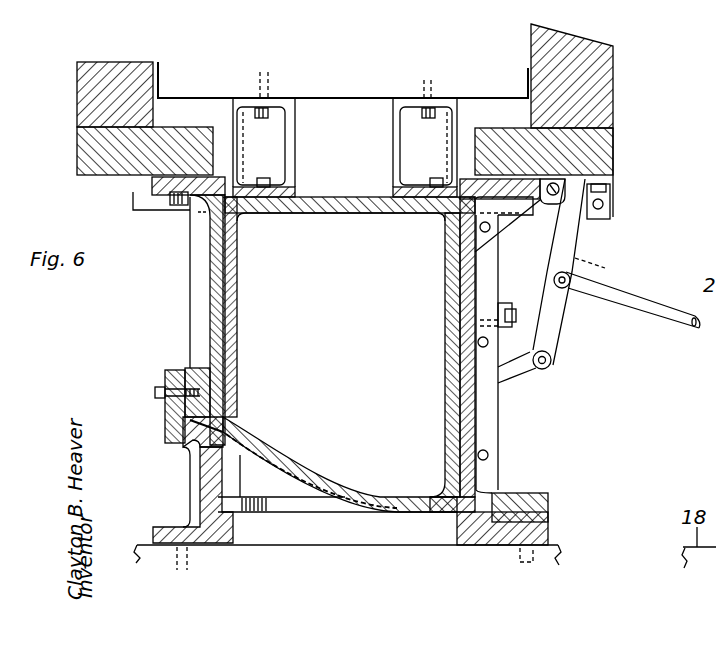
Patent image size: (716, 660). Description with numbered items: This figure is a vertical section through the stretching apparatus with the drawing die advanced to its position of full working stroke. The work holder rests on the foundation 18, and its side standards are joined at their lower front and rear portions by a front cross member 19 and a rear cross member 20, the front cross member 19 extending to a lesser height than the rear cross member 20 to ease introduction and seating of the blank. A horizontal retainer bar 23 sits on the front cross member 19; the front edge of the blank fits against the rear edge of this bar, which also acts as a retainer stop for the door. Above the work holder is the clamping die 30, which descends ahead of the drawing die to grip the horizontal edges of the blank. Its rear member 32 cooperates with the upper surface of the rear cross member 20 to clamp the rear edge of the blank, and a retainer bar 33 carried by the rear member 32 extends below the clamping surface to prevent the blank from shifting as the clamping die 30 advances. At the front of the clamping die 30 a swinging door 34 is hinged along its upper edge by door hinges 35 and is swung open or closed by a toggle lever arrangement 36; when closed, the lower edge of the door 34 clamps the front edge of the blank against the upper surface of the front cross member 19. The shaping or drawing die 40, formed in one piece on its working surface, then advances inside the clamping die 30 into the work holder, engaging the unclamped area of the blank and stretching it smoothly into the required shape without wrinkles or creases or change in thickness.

The foundation 18 is at (567, 553).
The front cross member 19 is at (483, 551).
The rear cross member 20 is at (200, 471).
The retainer bar 23 is at (502, 491).
The clamping die 30 is at (619, 101).
The rear member of clamping die 32 is at (190, 370).
The retainer bar 33 is at (161, 421).
The swinging door 34 is at (487, 432).
The door hinges 35 is at (557, 198).
The toggle lever arrangement 36 is at (558, 315).
The shaping or drawing die 40 is at (294, 457).